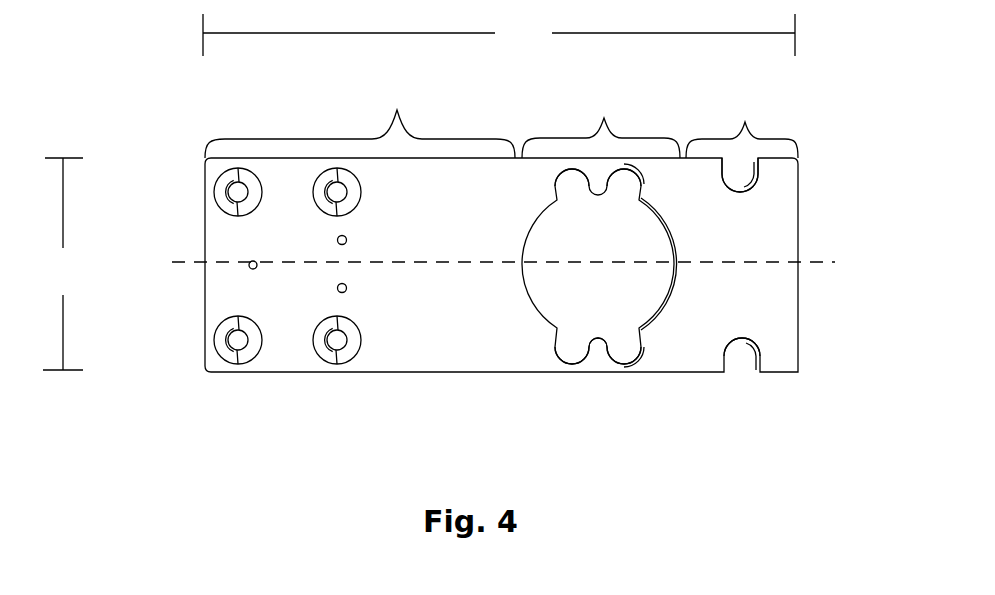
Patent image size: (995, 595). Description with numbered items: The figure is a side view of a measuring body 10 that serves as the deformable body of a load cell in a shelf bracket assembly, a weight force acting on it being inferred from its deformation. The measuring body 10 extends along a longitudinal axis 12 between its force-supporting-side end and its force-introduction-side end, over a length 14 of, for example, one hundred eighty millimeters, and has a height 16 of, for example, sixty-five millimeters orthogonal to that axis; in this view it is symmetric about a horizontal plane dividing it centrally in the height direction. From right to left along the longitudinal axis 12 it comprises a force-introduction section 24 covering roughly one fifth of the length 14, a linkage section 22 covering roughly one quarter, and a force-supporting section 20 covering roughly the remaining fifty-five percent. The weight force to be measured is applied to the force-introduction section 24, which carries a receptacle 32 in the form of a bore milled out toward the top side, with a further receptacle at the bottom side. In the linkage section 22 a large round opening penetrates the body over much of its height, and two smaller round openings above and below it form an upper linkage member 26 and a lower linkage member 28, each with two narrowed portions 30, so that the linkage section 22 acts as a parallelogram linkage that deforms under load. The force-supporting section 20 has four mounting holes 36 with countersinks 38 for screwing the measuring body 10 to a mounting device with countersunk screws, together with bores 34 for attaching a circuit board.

The measuring body 10 is at (447, 321).
The longitudinal axis 12 is at (527, 261).
The length 14 is at (499, 35).
The height 16 is at (61, 264).
The force-supporting section 20 is at (360, 120).
The linkage section 22 is at (601, 123).
The force-introduction section 24 is at (742, 123).
The upper linkage member 26 is at (600, 172).
The lower linkage member 28 is at (598, 358).
The narrowed portions 30 is at (557, 169).
The receptacle 32 is at (776, 123).
The bores for attachment of a circuit board 34 is at (352, 241).
The mounting holes 36 is at (236, 193).
The countersinks 38 is at (231, 209).